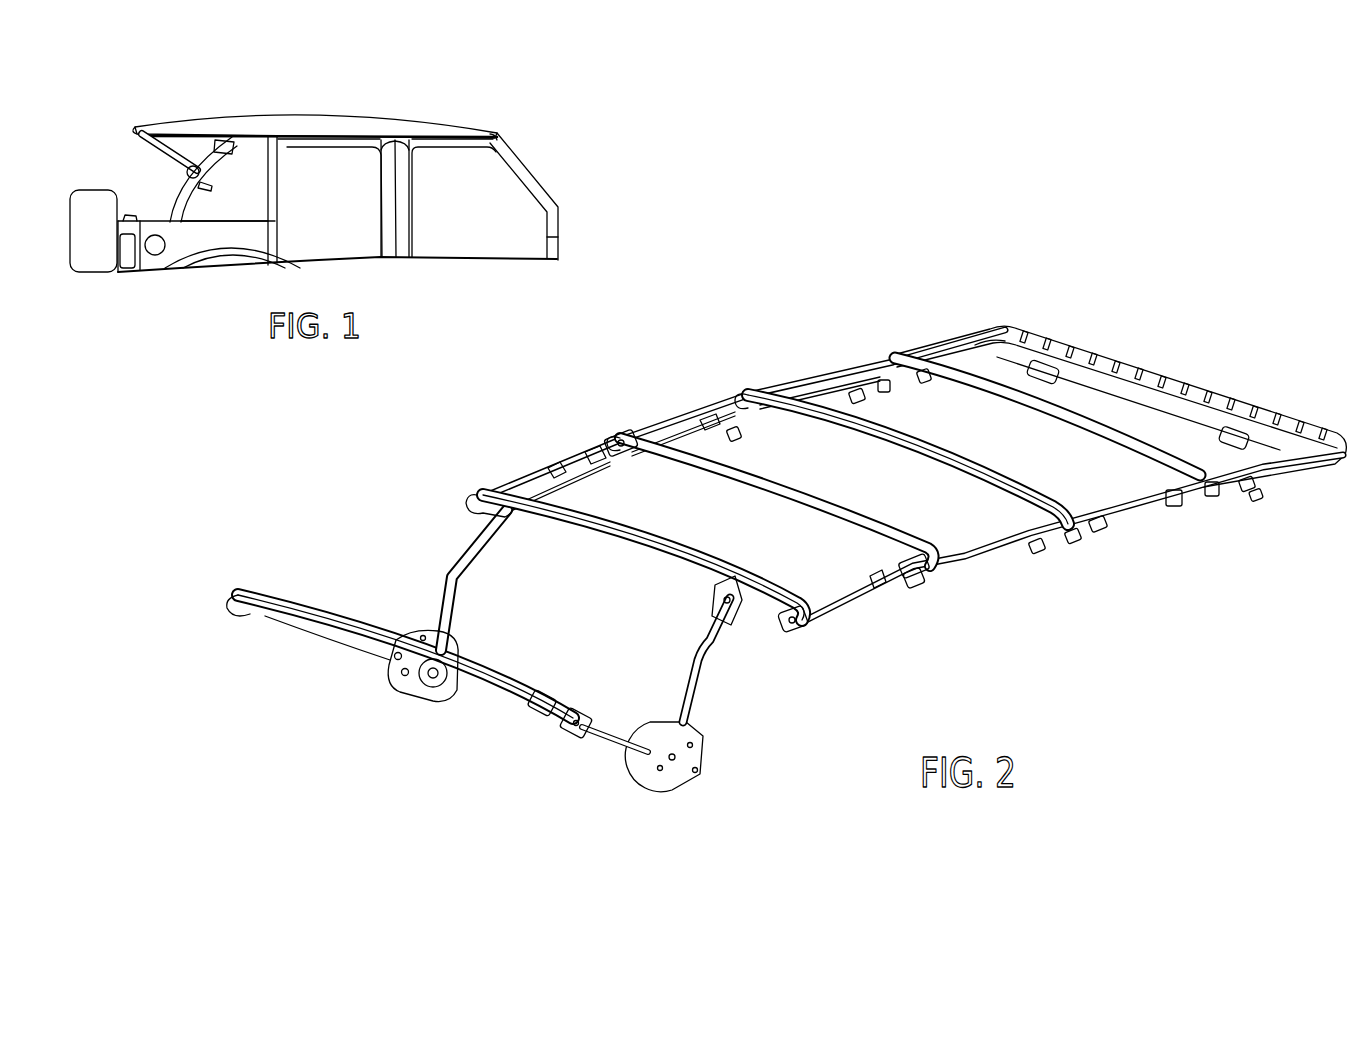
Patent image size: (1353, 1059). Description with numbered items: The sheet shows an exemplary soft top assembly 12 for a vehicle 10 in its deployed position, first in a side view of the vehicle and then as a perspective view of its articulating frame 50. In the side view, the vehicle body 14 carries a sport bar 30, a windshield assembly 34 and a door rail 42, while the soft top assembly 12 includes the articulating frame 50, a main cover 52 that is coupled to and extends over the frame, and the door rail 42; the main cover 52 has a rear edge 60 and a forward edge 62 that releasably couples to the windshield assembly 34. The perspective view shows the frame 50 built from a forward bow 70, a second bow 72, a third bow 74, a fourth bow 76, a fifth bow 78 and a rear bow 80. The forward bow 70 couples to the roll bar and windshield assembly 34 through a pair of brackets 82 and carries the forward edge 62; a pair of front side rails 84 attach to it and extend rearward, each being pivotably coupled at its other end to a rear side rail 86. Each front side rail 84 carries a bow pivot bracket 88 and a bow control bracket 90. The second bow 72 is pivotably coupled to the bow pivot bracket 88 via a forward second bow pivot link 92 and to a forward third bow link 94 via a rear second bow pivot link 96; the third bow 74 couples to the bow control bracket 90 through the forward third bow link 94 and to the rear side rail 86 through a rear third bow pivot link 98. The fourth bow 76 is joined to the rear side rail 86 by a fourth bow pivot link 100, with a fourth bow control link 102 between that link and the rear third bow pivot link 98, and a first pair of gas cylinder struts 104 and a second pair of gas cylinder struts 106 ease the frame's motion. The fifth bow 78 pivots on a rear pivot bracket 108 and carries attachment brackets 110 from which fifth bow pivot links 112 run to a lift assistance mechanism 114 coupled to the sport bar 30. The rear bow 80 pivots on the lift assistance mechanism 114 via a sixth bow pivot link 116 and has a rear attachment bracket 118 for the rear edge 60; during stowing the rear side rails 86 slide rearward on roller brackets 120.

In FIG. 1, the vehicle 10 is at (457, 85).
In FIG. 1, the soft top assembly 12 is at (112, 152).
In FIG. 1, the vehicle body 14 is at (152, 268).
In FIG. 1, the sport bar 30 is at (173, 203).
In FIG. 1, the windshield assembly 34 is at (533, 170).
In FIG. 1, the door rail 42 is at (280, 187).
In FIG. 1, the main cover 52 is at (298, 114).
In FIG. 1, the rear edge 60 is at (145, 121).
In FIG. 1, the forward edge 62 is at (497, 121).
In FIG. 2, the articulating frame 50 is at (1120, 293).
In FIG. 2, the forward bow 70 is at (1155, 370).
In FIG. 2, the second bow 72 is at (955, 372).
In FIG. 2, the third bow 74 is at (830, 405).
In FIG. 2, the fourth bow 76 is at (847, 505).
In FIG. 2, the fifth bow 78 is at (505, 494).
In FIG. 2, the rear bow 80 is at (462, 677).
In FIG. 2, the brackets 82 is at (1240, 434).
In FIG. 2, the front side rails 84 is at (1273, 482).
In FIG. 2, the rear side rail 86 is at (1007, 552).
In FIG. 2, the bow pivot bracket 88 is at (1255, 495).
In FIG. 2, the bow control bracket 90 is at (1213, 500).
In FIG. 2, the forward second bow pivot link 92 is at (1232, 490).
In FIG. 2, the forward third bow link 94 is at (1097, 528).
In FIG. 2, the rear second bow pivot link 96 is at (1180, 505).
In FIG. 2, the rear third bow pivot link 98 is at (1074, 542).
In FIG. 2, the fourth bow pivot link 100 is at (907, 560).
In FIG. 2, the fourth bow control link 102 is at (633, 437).
In FIG. 2, the gas cylinder struts 104 is at (920, 578).
In FIG. 2, the gas cylinder struts 106 is at (845, 583).
In FIG. 2, the rear pivot bracket 108 is at (788, 630).
In FIG. 2, the attachment brackets 110 is at (725, 603).
In FIG. 2, the fifth bow pivot link 112 is at (712, 660).
In FIG. 2, the lift assistance mechanism 114 is at (695, 752).
In FIG. 2, the sixth bow pivot link 116 is at (612, 745).
In FIG. 2, the rear attachment bracket 118 is at (553, 690).
In FIG. 2, the roller brackets 120 is at (1037, 550).